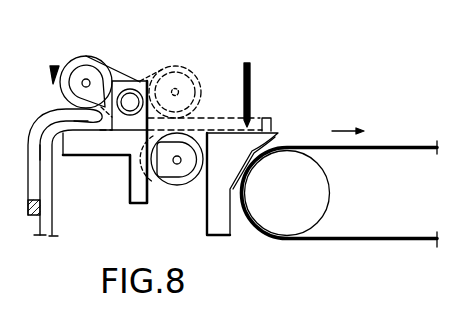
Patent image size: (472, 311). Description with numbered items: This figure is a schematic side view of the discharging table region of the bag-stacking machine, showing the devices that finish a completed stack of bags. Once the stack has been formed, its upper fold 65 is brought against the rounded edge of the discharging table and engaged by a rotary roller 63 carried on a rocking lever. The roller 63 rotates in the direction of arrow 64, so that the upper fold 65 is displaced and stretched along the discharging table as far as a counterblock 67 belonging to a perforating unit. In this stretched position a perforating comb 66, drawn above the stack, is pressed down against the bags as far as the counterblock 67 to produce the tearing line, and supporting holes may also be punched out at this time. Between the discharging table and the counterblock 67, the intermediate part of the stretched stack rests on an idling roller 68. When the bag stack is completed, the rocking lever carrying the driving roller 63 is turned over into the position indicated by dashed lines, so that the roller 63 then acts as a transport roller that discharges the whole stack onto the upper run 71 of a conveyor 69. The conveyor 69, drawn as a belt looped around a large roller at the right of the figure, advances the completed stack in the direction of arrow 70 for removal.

The rotary roller 63 is at (92, 57).
The arrow 64 is at (57, 64).
The upper fold 65 is at (43, 128).
The perforating comb 66 is at (246, 84).
The counterblock 67 is at (236, 162).
The idling roller 68 is at (180, 186).
The conveyor 69 is at (292, 229).
The arrow 70 is at (346, 131).
The upper run 71 is at (386, 146).